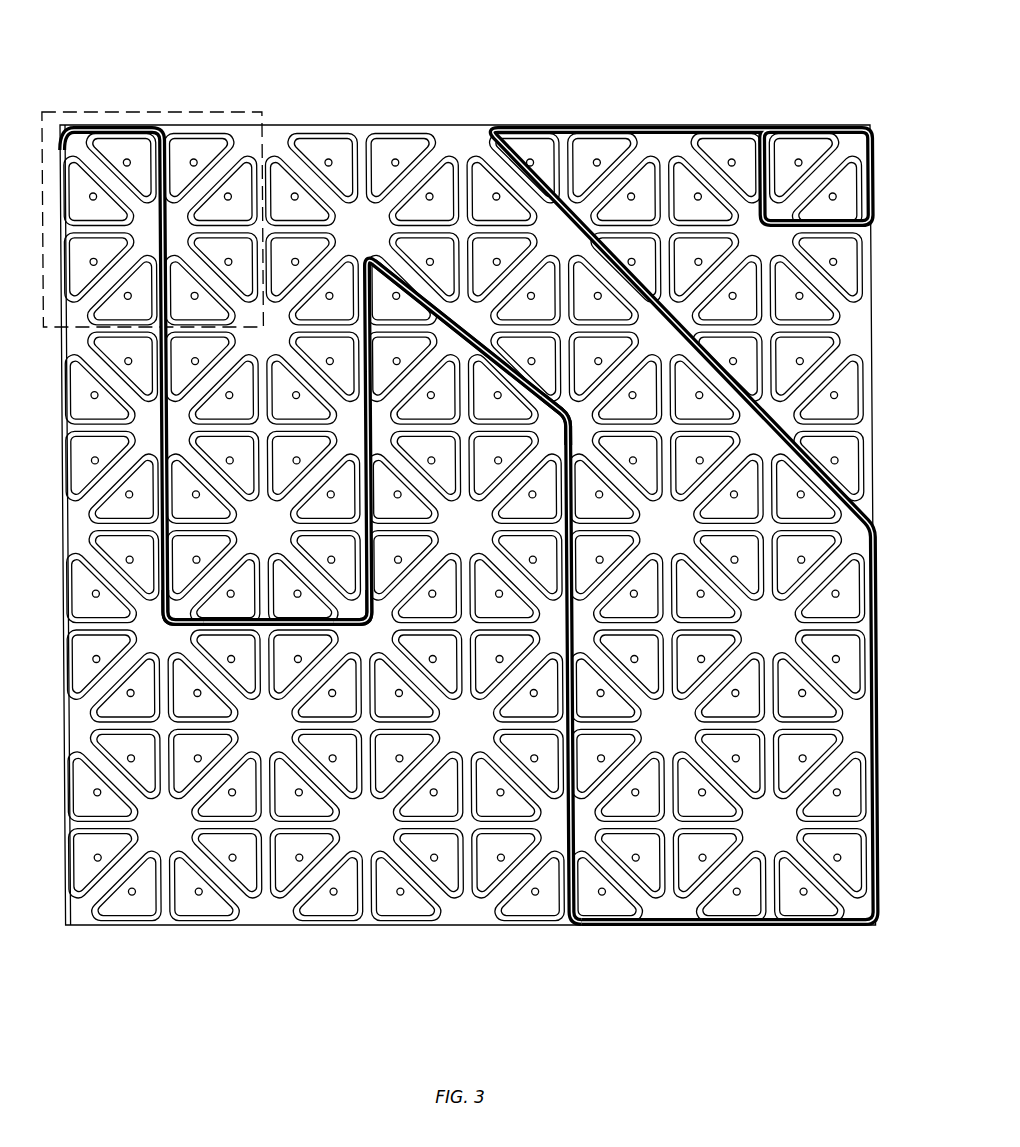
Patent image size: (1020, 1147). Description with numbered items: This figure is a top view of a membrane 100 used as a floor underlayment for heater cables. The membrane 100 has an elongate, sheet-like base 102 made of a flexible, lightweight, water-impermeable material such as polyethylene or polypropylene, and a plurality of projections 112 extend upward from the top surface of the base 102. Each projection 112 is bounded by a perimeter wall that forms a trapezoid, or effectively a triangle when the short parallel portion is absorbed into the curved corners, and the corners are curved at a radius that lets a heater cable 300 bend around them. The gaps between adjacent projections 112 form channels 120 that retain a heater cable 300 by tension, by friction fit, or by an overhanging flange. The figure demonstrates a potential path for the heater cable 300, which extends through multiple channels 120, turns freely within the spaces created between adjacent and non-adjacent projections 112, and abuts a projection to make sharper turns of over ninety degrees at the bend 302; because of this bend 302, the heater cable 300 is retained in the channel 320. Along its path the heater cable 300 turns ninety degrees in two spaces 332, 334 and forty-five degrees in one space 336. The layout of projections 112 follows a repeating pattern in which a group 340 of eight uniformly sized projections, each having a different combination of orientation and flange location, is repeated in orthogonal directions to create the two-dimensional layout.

The membrane 100 is at (459, 498).
The base 102 is at (274, 133).
The projection 112 is at (386, 127).
The channel 120 is at (262, 898).
The heater cable 300 is at (560, 127).
The bend 302 is at (365, 253).
The channel 320 is at (440, 312).
The space 332 is at (172, 650).
The space 334 is at (358, 645).
The space 336 is at (590, 415).
The group 340 is at (163, 112).